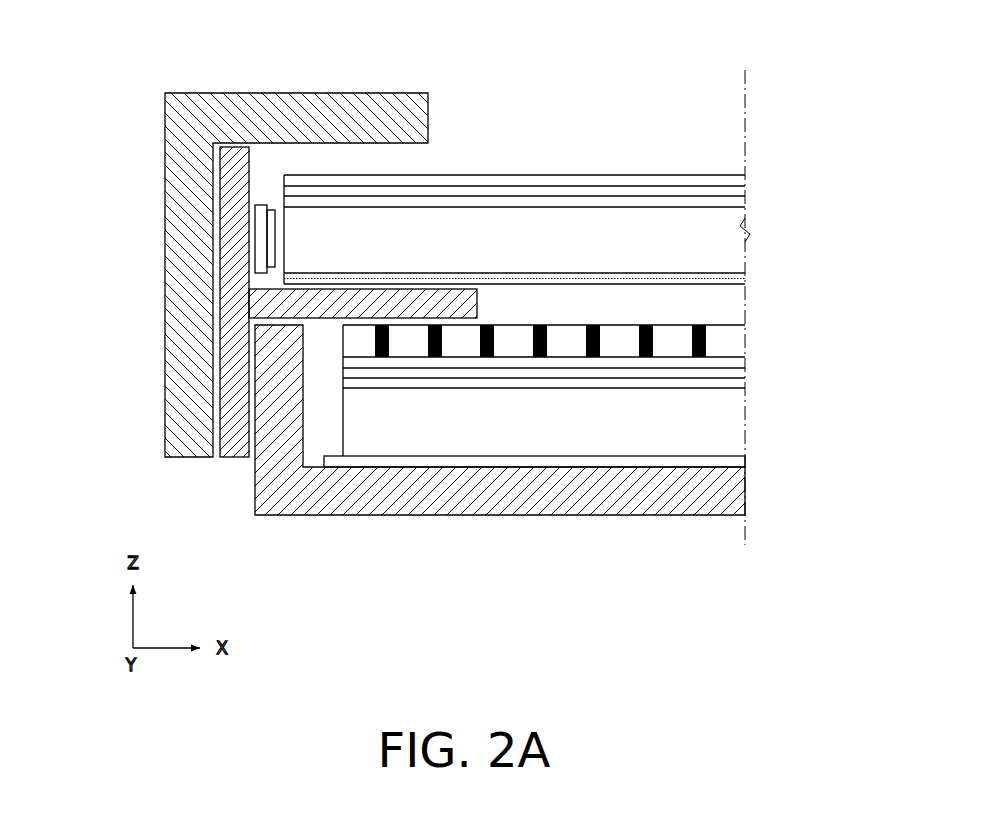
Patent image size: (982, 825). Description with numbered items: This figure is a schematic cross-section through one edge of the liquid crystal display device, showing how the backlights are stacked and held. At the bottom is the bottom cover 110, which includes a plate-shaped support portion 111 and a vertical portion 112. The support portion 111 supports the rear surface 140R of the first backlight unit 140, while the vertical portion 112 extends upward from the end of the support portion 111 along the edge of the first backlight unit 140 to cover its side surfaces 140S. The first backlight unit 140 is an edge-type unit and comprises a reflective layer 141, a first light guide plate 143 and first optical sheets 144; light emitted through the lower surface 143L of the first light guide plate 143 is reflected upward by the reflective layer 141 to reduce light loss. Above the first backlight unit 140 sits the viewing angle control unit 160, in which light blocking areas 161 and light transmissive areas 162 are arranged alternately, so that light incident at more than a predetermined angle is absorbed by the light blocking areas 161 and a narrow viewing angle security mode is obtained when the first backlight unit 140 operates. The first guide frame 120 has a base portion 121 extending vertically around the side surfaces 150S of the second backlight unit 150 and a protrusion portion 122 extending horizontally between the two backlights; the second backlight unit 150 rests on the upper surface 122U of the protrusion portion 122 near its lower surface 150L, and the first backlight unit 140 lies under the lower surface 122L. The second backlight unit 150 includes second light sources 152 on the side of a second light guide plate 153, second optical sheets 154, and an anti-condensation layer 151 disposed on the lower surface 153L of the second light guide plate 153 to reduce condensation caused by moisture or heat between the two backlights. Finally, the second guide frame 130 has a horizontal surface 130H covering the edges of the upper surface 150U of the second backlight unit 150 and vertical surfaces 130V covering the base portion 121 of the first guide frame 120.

The bottom cover 110 is at (541, 468).
The support portion 111 is at (343, 488).
The vertical portion 112 is at (277, 454).
The first guide frame 120 is at (259, 302).
The base portion 121 is at (234, 248).
The protrusion portion 122 is at (285, 296).
The upper surface of the protrusion portion 122U is at (443, 284).
The lower surface of the protrusion portion 122L is at (414, 330).
The second guide frame 130 is at (415, 114).
The horizontal surface 130H is at (354, 128).
The vertical surfaces 130V is at (203, 165).
The first backlight unit 140 is at (603, 413).
The reflective layer 141 is at (733, 461).
The first light guide plate 143 is at (733, 427).
The first optical sheets 144 is at (585, 372).
The side surfaces of the first backlight unit 140S is at (332, 400).
The rear surface of the first backlight unit 140R is at (620, 478).
The lower surface of the first light guide plate 143L is at (683, 468).
The second backlight unit 150 is at (569, 231).
The anti-condensation layer 151 is at (555, 277).
The second light sources 152 is at (268, 250).
The second light guide plate 153 is at (733, 224).
The second optical sheets 154 is at (746, 175).
The side surfaces of the second backlight unit 150S is at (275, 188).
The upper surface of the second backlight unit 150U is at (673, 165).
The lower surface of the second backlight unit 150L is at (513, 296).
The lower surface of the second light guide plate 153L is at (563, 288).
The viewing angle control unit 160 is at (613, 334).
The light blocking areas 161 is at (707, 335).
The light transmissive areas 162 is at (730, 345).